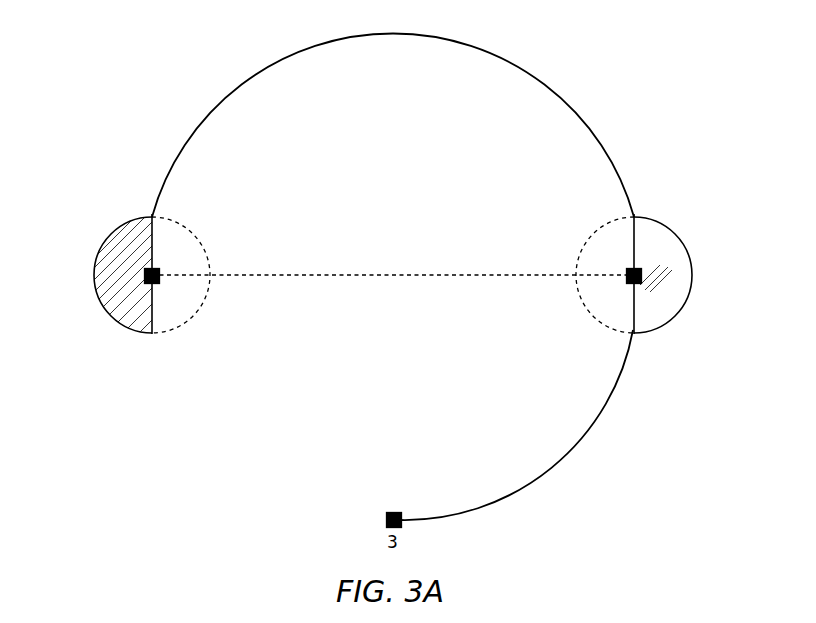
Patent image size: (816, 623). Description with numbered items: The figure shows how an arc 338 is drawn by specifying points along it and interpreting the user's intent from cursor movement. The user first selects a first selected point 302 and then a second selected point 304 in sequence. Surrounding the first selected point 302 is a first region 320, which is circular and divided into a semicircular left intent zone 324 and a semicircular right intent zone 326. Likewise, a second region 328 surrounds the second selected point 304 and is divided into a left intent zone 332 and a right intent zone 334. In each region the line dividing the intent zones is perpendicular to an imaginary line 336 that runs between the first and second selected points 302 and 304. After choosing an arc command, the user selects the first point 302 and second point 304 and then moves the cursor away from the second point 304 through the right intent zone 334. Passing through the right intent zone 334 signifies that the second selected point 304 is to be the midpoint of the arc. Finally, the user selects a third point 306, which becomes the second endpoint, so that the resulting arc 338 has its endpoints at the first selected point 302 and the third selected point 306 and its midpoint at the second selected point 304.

The first selected point 302 is at (161, 279).
The second selected point 304 is at (626, 280).
The third selected point 306 is at (386, 519).
The first region 320 is at (144, 263).
The left intent zone 324 is at (97, 255).
The right intent zone 326 is at (187, 230).
The second region 328 is at (643, 263).
The left intent zone 332 is at (586, 230).
The right intent zone 334 is at (692, 255).
The imaginary line 336 is at (392, 272).
The arc 338 is at (300, 49).